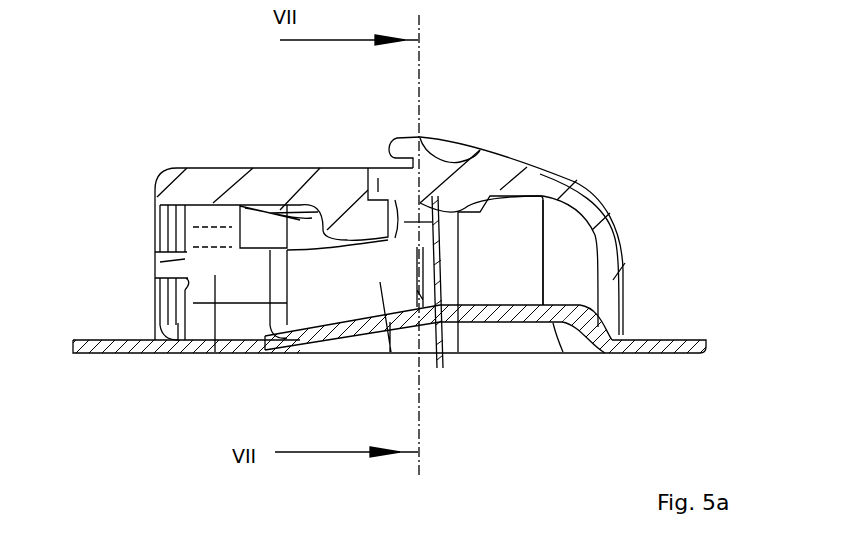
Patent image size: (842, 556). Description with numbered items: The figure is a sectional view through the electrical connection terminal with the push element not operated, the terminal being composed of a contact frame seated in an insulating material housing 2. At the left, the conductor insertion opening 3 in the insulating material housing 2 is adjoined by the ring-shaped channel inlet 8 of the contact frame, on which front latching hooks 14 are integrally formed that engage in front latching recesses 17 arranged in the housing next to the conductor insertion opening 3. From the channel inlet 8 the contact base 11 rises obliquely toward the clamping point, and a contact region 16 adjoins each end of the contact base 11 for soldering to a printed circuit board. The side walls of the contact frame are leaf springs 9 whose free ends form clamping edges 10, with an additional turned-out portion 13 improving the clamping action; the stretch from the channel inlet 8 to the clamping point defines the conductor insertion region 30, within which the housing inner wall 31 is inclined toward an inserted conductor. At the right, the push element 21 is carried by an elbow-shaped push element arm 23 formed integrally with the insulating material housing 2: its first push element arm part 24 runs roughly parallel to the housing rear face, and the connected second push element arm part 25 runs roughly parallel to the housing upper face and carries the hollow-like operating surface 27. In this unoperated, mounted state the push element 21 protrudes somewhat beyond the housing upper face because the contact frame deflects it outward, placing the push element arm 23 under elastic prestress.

The insulating material housing 2 is at (203, 184).
The conductor insertion opening 3 is at (152, 297).
The channel inlet 8 is at (213, 355).
The leaf springs 9 is at (392, 353).
The clamping edge 10 is at (445, 262).
The contact base 11 is at (337, 353).
The turned-out portion 13 is at (442, 307).
The front latching hooks 14 is at (175, 268).
The contact regions 16 is at (132, 347).
The front latching recesses 17 is at (157, 252).
The push element 21 is at (613, 187).
The push element arm 23 is at (620, 226).
The first push element arm part 24 is at (607, 242).
The second push element arm part 25 is at (523, 167).
The operating surface 27 is at (447, 155).
The conductor insertion region 30 is at (410, 127).
The housing inner wall 31 is at (320, 168).